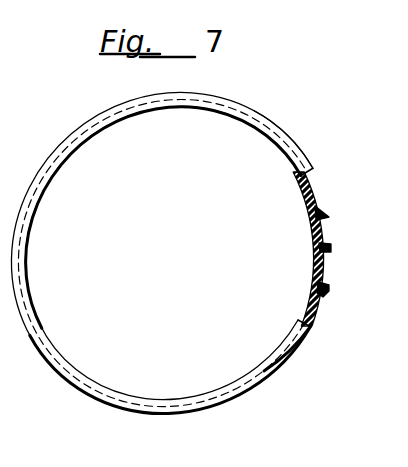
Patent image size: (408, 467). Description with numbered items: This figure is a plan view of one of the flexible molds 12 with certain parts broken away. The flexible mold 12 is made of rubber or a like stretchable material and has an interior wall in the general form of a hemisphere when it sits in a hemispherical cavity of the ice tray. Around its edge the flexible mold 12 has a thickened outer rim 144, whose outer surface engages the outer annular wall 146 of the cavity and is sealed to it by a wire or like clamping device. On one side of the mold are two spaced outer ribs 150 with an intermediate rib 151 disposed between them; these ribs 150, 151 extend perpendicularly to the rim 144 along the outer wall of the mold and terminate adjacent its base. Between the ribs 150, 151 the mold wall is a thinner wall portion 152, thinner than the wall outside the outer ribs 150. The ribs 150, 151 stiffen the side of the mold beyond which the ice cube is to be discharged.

The flexible mold 12 is at (77, 376).
The thickened outer rim 144 is at (293, 160).
The outer annular wall 146 is at (223, 392).
The outer ribs 150 is at (323, 212).
The intermediate rib 151 is at (331, 250).
The thinner wall portion 152 is at (313, 250).